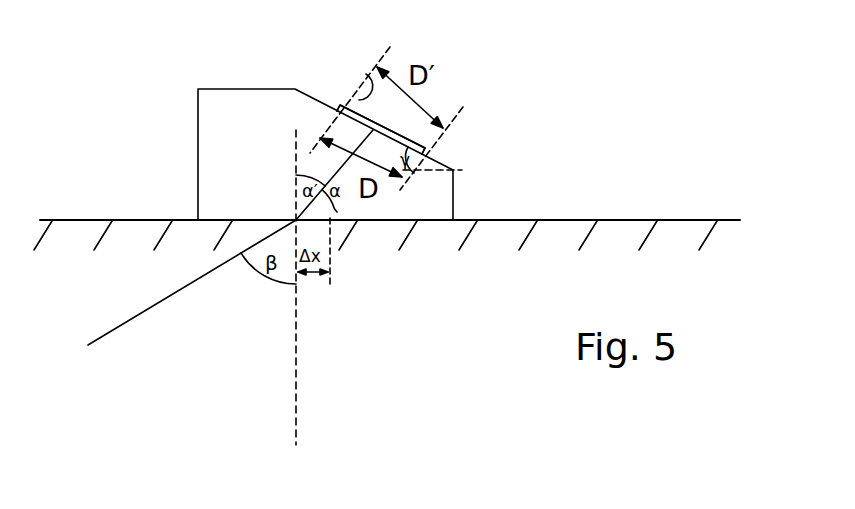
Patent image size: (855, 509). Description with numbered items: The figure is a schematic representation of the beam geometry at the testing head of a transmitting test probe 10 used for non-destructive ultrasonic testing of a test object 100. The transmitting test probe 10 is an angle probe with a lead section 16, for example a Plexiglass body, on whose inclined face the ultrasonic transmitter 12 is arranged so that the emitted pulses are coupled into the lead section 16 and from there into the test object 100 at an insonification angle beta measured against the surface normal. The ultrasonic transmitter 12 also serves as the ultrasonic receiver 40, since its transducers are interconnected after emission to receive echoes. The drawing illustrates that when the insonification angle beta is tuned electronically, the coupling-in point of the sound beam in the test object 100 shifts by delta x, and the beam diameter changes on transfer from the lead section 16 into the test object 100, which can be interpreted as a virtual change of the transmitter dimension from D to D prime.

The transmitting test probe 10 is at (160, 127).
The lead section 16 is at (244, 113).
The ultrasonic transmitter 12 is at (425, 148).
The ultrasonic receiver 40 is at (381, 129).
The test object 100 is at (550, 302).